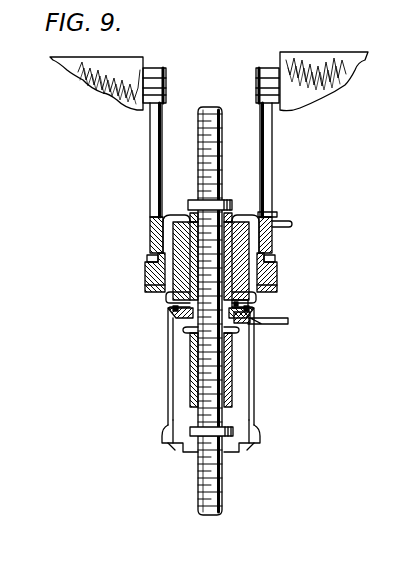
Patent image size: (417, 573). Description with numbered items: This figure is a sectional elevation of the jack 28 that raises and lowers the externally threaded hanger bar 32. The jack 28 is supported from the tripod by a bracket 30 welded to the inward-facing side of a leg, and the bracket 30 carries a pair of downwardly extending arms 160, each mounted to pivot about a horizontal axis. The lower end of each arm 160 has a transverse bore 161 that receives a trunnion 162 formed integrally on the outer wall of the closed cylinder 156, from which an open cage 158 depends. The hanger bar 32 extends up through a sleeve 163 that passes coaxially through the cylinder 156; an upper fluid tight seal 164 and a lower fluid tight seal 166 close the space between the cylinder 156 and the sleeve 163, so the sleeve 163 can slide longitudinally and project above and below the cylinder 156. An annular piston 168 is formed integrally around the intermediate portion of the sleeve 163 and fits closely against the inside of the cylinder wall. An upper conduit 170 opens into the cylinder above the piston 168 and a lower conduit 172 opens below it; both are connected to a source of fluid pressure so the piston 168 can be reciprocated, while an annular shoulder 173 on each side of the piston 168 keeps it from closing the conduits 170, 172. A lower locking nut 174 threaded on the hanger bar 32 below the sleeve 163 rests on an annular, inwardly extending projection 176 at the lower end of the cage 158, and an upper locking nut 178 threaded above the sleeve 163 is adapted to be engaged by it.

The jack 28 is at (268, 378).
The bracket 30 is at (76, 66).
The hanger bar 32 is at (210, 105).
The closed cylinder 156 is at (168, 306).
The open cage 158 is at (256, 398).
The arms 160 is at (152, 127).
The transverse bore 161 is at (140, 268).
The trunnions 162 is at (145, 276).
The sleeve 163 is at (195, 382).
The upper fluid tight seal 164 is at (268, 218).
The lower fluid tight seal 166 is at (252, 330).
The annular piston 168 is at (250, 314).
The upper conduit 170 is at (292, 226).
The lower conduit 172 is at (290, 321).
The annular shoulder 173 is at (180, 318).
The lower locking nut 174 is at (254, 426).
The annular inwardly extending projection 176 is at (240, 450).
The upper locking nut 178 is at (232, 202).